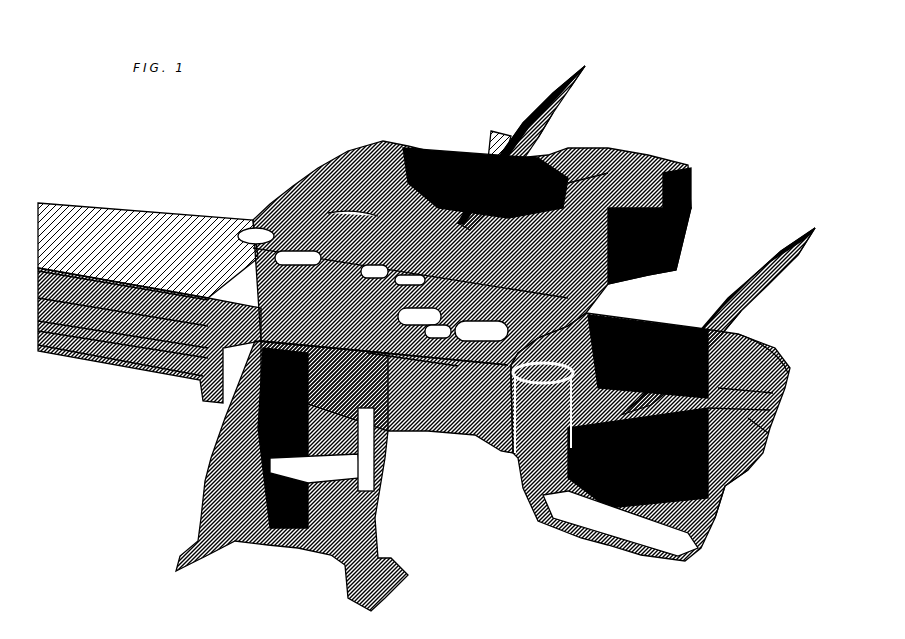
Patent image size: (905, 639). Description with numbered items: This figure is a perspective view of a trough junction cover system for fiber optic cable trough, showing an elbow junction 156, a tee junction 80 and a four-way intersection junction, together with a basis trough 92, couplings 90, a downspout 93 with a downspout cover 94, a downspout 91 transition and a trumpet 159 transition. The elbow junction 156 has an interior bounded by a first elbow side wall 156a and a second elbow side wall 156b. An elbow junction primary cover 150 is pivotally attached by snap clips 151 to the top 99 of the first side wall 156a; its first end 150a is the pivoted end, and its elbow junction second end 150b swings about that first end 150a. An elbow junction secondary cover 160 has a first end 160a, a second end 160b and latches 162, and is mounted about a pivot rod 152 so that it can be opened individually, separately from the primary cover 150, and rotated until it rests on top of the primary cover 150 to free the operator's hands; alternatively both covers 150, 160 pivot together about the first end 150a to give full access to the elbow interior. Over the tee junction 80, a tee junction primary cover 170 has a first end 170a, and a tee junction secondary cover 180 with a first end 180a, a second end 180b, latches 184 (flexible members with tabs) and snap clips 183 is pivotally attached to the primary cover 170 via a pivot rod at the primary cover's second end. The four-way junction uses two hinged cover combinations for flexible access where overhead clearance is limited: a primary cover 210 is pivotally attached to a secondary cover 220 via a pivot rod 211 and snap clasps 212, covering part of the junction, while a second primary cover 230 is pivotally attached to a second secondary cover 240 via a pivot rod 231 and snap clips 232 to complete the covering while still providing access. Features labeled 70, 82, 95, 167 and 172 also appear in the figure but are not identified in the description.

The electrical connector assembly 70 is at (183, 325).
The tee junction 80 is at (485, 183).
The housing wall 82 is at (618, 241).
The couplings 90 is at (684, 175).
The downspout transition 91 is at (303, 502).
The basis trough 92 is at (145, 247).
The downspout 93 is at (267, 232).
The downspout cover 94 is at (307, 163).
The housing top surface 95 is at (353, 221).
The top of first side wall 99 is at (763, 400).
The elbow junction primary cover 150 is at (760, 333).
The first end of elbow junction primary cover 150a is at (745, 385).
The elbow junction second end 150b is at (777, 350).
The snap clips 151 is at (757, 423).
The pivot rod 152 is at (649, 354).
The elbow junction 156 is at (747, 453).
The first elbow side wall 156a is at (730, 470).
The second elbow side wall 156b is at (540, 420).
The trumpet transition 159 is at (573, 510).
The elbow junction secondary cover 160 is at (760, 287).
The first end of secondary cover 160a is at (697, 323).
The second end of secondary cover 160b is at (797, 236).
The latches 162 is at (688, 323).
The second blade edge 167 is at (727, 327).
The tee junction primary cover 170 is at (588, 175).
The tee junction primary cover first end 170a is at (597, 195).
The upper housing opening 172 is at (512, 227).
The tee junction secondary cover 180 is at (560, 95).
The first end of tee junction secondary cover 180a is at (482, 140).
The second end of tee junction secondary cover 180b is at (542, 83).
The snap clips 183 is at (547, 137).
The latches 184 is at (487, 123).
The primary cover 210 is at (448, 307).
The pivot rod 211 is at (445, 318).
The snap clasps 212 is at (487, 322).
The secondary cover 220 is at (413, 350).
The second primary cover 230 is at (384, 329).
The pivot rod 231 is at (322, 268).
The snap clips 232 is at (387, 268).
The second secondary cover 240 is at (408, 266).